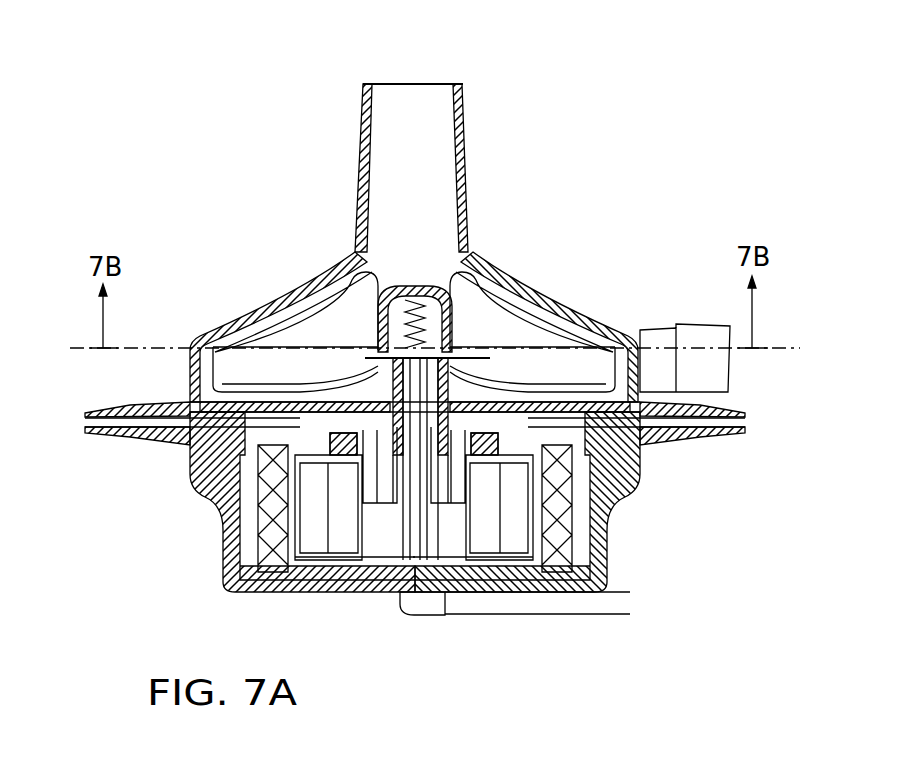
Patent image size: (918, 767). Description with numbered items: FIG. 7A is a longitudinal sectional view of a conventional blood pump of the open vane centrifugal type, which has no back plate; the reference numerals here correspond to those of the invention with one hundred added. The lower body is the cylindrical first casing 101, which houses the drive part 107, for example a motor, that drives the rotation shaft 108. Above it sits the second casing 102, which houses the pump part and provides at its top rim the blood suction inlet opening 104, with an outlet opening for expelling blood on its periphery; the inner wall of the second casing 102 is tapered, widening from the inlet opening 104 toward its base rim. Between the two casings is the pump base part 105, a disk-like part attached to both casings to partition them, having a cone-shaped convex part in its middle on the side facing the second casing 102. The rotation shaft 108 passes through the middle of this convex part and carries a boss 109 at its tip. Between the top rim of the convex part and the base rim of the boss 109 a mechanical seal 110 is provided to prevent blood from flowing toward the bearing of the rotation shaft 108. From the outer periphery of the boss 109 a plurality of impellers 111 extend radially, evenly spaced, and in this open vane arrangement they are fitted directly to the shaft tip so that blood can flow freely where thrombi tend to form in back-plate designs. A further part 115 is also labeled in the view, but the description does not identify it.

The first casing 101 is at (212, 553).
The second casing 102 is at (543, 290).
The inlet opening 104 is at (433, 84).
The pump base part 105 is at (190, 394).
The drive part 107 is at (314, 562).
The rotation shaft 108 is at (412, 560).
The boss 109 is at (440, 268).
The mechanical seal 110 is at (490, 358).
The impellers 111 is at (318, 332).
The connector 115 is at (730, 370).